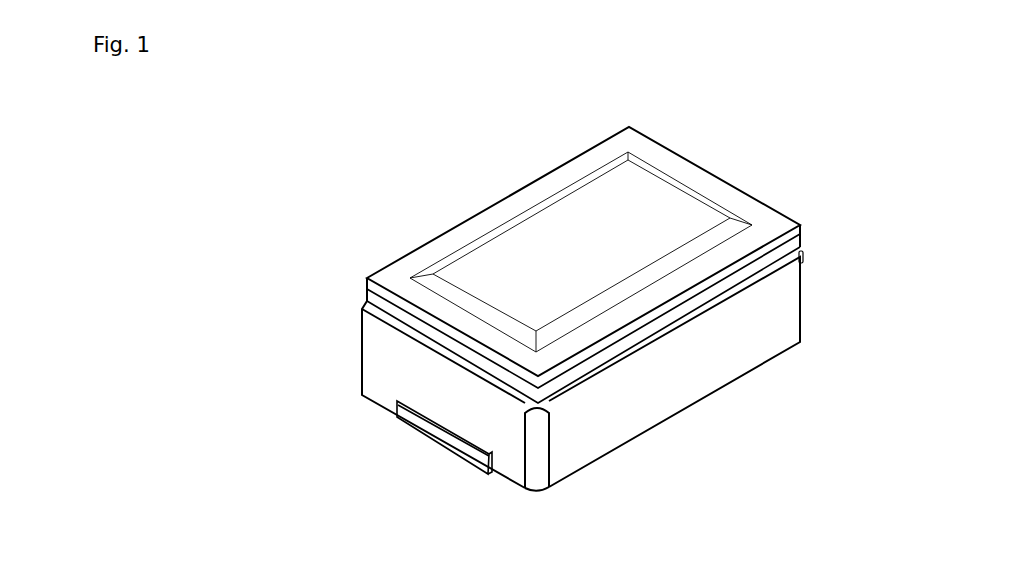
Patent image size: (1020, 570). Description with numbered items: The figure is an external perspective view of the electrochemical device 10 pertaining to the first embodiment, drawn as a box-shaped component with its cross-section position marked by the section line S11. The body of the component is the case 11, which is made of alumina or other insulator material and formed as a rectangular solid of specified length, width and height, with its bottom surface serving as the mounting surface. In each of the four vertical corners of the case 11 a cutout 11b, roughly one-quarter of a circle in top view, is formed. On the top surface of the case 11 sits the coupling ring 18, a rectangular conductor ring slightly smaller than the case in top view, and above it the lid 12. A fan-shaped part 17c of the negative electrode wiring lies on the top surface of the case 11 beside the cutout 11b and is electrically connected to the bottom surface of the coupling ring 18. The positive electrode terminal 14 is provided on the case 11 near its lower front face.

The electronic component module 10 is at (439, 227).
The case 11 is at (372, 353).
The cutout 11b is at (363, 379).
The lid 12 is at (365, 286).
The positive electrode terminal 14 is at (433, 436).
The fan-shaped part 17c is at (805, 261).
The coupling ring 18 is at (362, 300).
The section line S11 is at (410, 350).